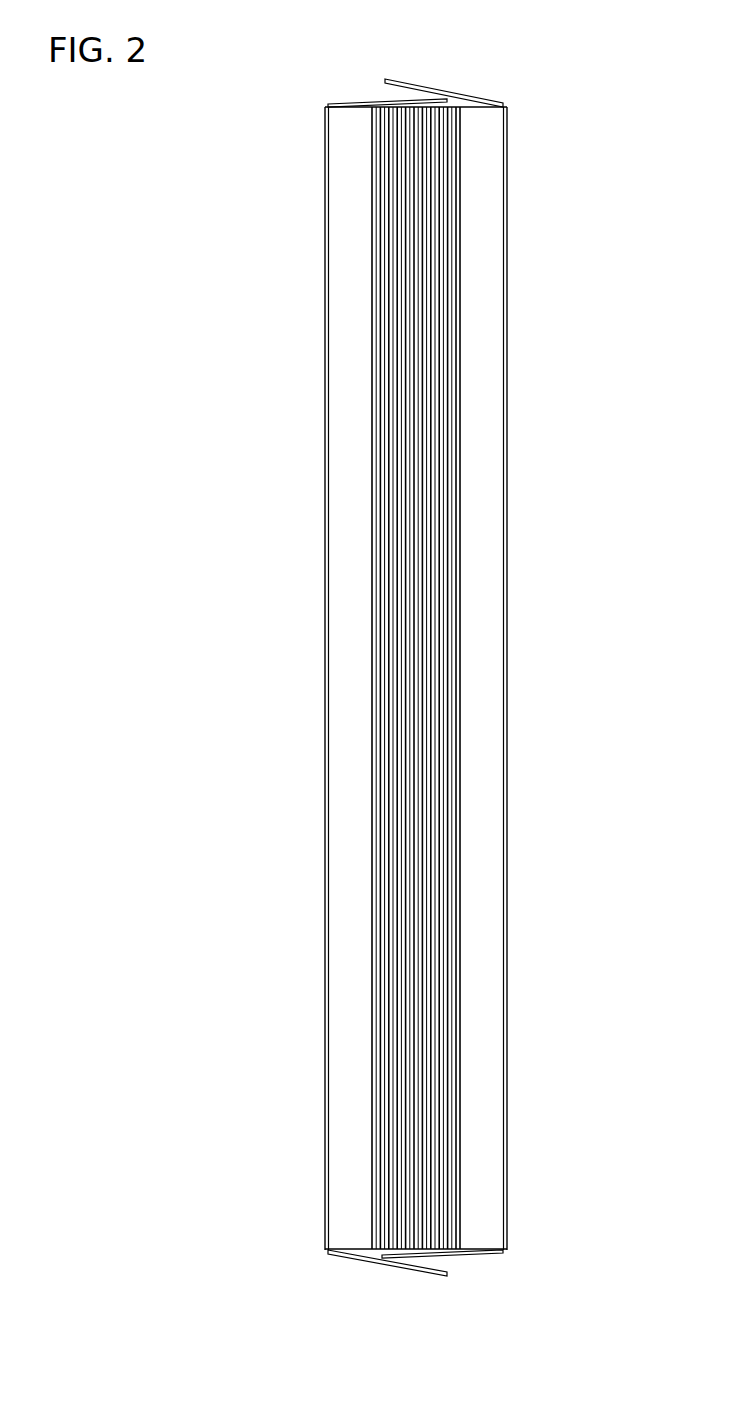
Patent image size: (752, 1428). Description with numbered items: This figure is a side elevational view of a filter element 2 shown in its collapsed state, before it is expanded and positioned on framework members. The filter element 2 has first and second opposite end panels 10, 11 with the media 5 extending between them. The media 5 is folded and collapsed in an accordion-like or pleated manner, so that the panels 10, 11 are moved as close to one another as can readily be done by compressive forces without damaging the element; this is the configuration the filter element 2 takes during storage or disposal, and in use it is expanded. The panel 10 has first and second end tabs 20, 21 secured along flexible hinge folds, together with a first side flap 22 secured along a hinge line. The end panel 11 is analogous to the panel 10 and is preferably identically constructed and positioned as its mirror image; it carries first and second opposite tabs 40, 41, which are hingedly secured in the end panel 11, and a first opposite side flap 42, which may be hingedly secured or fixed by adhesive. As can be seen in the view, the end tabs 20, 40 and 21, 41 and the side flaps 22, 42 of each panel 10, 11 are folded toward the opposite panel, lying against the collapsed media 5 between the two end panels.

The filter element 2 is at (248, 724).
The media 5 is at (402, 298).
The panel 10 is at (508, 860).
The end panel 11 is at (327, 948).
The first end tab 20 is at (433, 87).
The second end tab 21 is at (462, 1255).
The first side flap 22 is at (482, 427).
The first opposite tab 40 is at (370, 100).
The second opposite tab 41 is at (362, 1258).
The first opposite side flap 42 is at (343, 477).